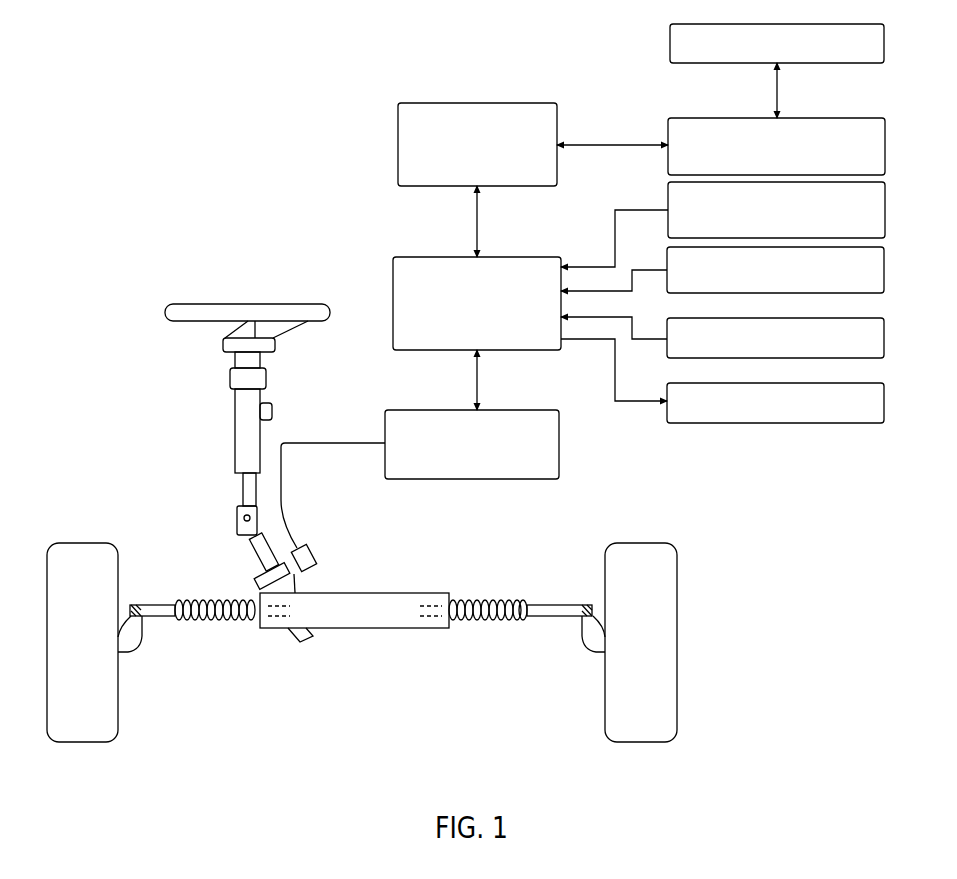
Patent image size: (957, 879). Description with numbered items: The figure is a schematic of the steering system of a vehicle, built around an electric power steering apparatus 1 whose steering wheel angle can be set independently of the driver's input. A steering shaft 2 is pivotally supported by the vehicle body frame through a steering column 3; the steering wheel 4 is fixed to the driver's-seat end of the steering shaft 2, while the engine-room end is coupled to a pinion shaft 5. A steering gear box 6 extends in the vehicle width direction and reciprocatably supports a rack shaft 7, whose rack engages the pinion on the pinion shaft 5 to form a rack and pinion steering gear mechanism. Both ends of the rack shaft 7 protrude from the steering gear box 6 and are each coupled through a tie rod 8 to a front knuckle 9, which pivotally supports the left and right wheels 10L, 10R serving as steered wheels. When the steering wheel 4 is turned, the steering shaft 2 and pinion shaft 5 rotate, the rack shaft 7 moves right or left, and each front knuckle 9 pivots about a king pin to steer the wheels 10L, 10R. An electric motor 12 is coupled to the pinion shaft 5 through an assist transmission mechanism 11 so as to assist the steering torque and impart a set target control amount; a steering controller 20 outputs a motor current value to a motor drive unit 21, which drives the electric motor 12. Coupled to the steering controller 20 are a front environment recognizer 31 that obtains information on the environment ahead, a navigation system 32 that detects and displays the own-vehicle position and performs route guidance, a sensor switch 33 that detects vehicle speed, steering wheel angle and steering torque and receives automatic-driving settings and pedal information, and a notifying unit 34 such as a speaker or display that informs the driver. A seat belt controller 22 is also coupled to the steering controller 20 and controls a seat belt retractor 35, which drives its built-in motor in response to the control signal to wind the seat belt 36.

The electric power steering apparatus 1 is at (145, 465).
The steering shaft 2 is at (243, 493).
The steering column 3 is at (235, 427).
The steering wheel 4 is at (252, 304).
The pinion shaft 5 is at (250, 560).
The steering gear box 6 is at (378, 628).
The rack shaft 7 is at (430, 592).
The tie rod 8 is at (163, 618).
The front knuckle 9 is at (130, 655).
The right wheel 10R is at (83, 743).
The left wheel 10L is at (638, 743).
The assist transmission mechanism 11 is at (256, 588).
The electric motor 12 is at (318, 556).
The steering controller 20 is at (525, 257).
The motor drive unit 21 is at (515, 410).
The seat belt controller 22 is at (524, 103).
The front environment recognizer 31 is at (885, 208).
The navigation system 32 is at (884, 268).
The sensor switch 33 is at (884, 337).
The notifying unit 34 is at (884, 400).
The seat belt retractor 35 is at (885, 143).
The seat belt 36 is at (884, 44).